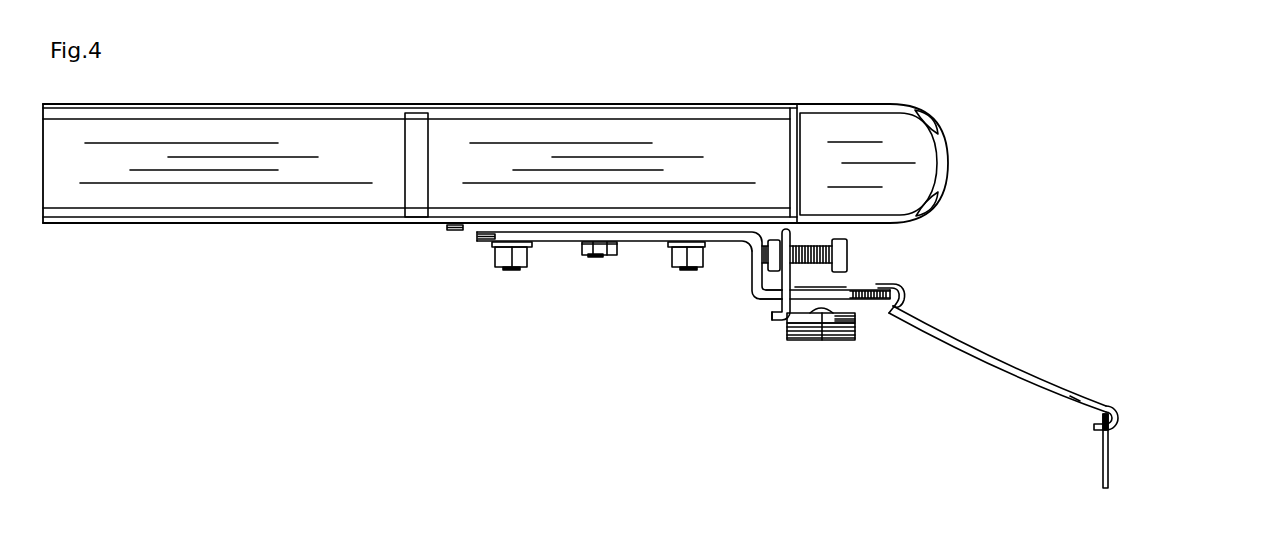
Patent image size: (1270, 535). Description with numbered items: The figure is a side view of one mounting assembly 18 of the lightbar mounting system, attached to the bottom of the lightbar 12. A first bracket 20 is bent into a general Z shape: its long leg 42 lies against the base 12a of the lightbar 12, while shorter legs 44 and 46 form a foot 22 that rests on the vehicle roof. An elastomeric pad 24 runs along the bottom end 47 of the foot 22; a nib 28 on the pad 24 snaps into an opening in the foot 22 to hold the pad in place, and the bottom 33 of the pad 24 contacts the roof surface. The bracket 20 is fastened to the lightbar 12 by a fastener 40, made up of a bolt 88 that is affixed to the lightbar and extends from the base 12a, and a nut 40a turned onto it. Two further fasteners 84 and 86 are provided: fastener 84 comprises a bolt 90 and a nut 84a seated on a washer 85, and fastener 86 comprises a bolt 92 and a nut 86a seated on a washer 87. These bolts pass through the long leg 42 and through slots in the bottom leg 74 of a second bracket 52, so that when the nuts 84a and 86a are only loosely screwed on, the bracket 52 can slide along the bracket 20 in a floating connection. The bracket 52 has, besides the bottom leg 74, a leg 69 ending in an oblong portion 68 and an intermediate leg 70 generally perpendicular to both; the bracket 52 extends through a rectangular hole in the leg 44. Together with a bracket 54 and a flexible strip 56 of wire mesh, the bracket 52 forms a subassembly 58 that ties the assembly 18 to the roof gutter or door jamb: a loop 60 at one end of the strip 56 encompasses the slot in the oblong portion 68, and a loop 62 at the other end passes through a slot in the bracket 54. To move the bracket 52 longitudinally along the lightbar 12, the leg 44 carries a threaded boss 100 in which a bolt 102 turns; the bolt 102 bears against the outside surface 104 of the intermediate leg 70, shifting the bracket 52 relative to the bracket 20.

The lightbar 12 is at (706, 103).
The base of the lightbar 12a is at (216, 224).
The first bracket 20 is at (640, 237).
The bottom leg of bracket 52 74 is at (665, 237).
The long leg 42 is at (446, 229).
The washer 87 is at (478, 238).
The fastener 86 is at (500, 262).
The nut 86a is at (508, 268).
The bolt 92 is at (518, 266).
The washer 85 is at (592, 260).
The bracket 52 is at (586, 258).
The bolt 88 is at (582, 257).
The fastener 40 is at (612, 247).
The nut 40a is at (596, 259).
The bolt 90 is at (682, 269).
The nut 84a is at (680, 260).
The fastener 84 is at (767, 257).
The threaded boss 100 is at (722, 262).
The leg 44 is at (792, 286).
The bolt 102 is at (850, 262).
The intermediate leg 70 is at (750, 272).
The mounting assembly 18 is at (699, 328).
The outside surface of leg 70 104 is at (770, 290).
The foot 22 is at (787, 323).
The projection or nib 28 is at (822, 316).
The pad 24 is at (856, 325).
The bottom of pad 33 is at (803, 322).
The leg 46 is at (812, 318).
The leg of bracket 52 69 is at (878, 285).
The loop 60 is at (895, 286).
The oblong portion 68 is at (910, 299).
The bottom end of foot 47 is at (858, 302).
The flexible strip 56 is at (1003, 355).
The loop 62 is at (1120, 416).
The bracket 54 is at (1110, 462).
The subassembly 58 is at (1073, 397).